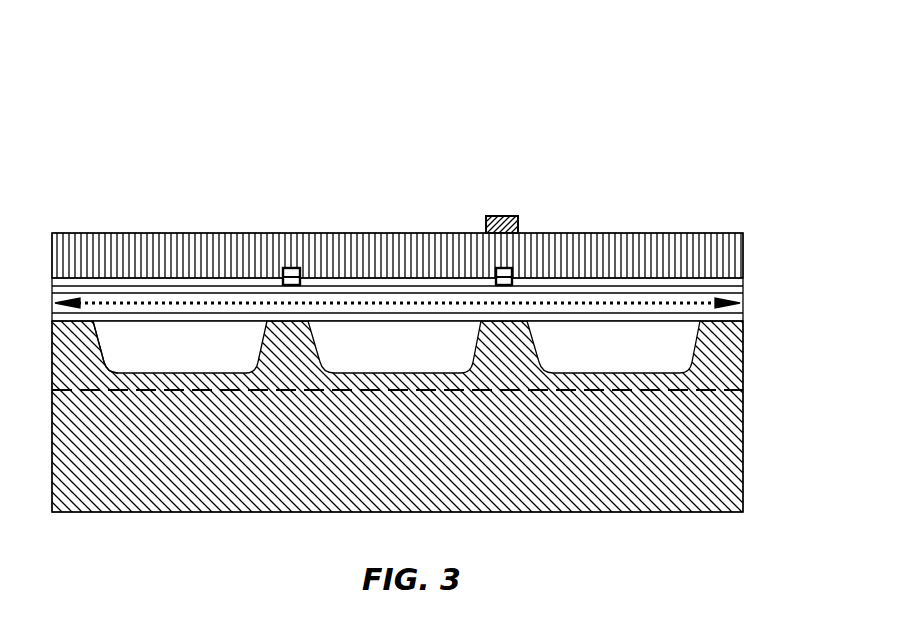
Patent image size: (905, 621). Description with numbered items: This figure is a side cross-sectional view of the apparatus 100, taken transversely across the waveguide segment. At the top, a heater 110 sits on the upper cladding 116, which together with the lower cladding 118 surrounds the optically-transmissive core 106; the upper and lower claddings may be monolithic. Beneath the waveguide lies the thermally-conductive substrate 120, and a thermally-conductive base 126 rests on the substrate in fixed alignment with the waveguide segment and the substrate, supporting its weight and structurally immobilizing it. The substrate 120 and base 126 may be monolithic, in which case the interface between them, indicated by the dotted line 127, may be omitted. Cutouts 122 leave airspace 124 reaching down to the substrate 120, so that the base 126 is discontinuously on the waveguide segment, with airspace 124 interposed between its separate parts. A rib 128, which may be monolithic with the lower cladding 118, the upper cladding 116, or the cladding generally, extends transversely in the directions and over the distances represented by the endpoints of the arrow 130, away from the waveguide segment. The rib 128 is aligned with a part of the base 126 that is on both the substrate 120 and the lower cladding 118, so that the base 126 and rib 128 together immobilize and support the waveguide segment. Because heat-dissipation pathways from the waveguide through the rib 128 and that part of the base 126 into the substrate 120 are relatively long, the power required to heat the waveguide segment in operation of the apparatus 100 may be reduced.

The apparatus 100 is at (658, 120).
The optically-transmissive core 106 is at (290, 268).
The heater 110 is at (505, 216).
The upper cladding 116 is at (138, 258).
The lower cladding 118 is at (722, 287).
The thermally-conductive substrate 120 is at (415, 472).
The cutouts 122 is at (201, 364).
The airspace 124 is at (122, 355).
The thermally-conductive base 126 is at (308, 381).
The dotted line 127 is at (512, 390).
The rib 128 is at (766, 268).
The arrow 130 is at (704, 305).